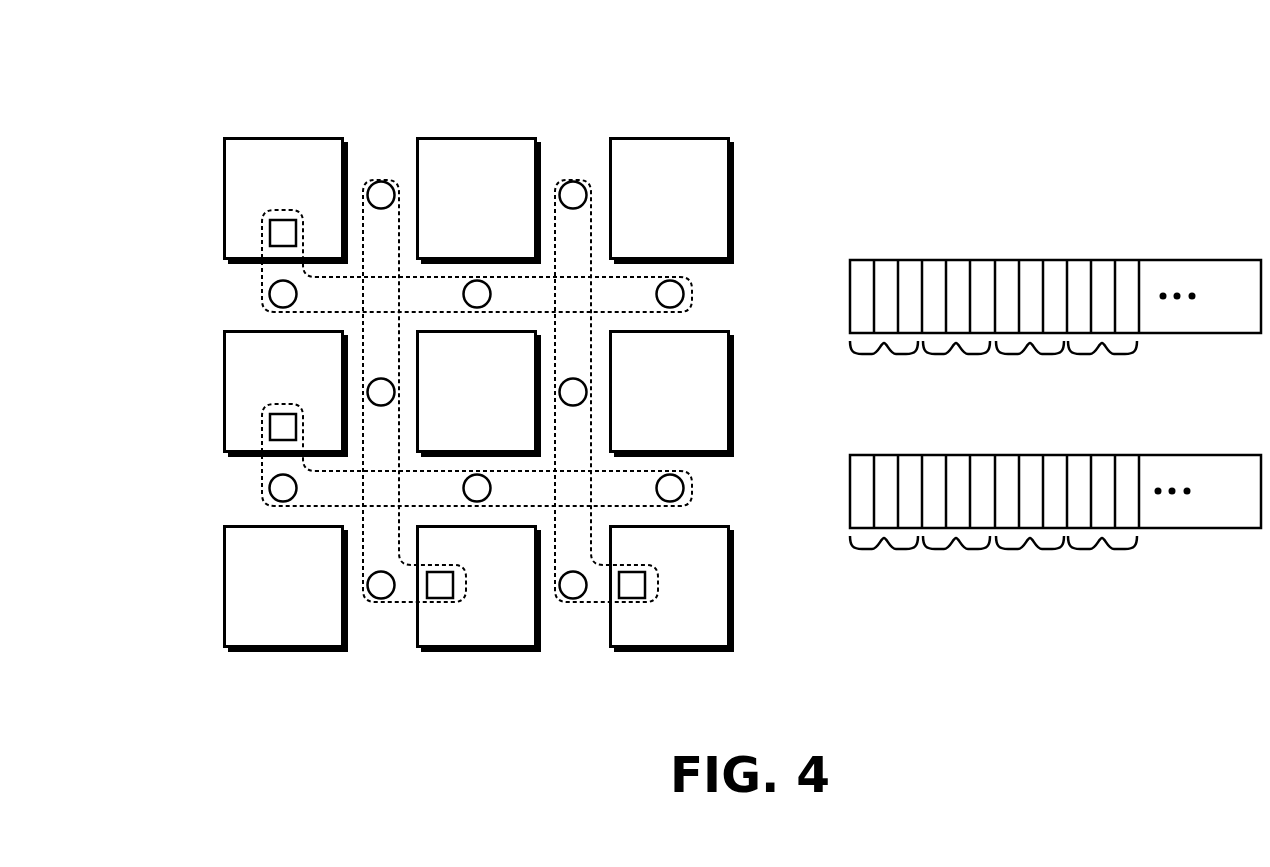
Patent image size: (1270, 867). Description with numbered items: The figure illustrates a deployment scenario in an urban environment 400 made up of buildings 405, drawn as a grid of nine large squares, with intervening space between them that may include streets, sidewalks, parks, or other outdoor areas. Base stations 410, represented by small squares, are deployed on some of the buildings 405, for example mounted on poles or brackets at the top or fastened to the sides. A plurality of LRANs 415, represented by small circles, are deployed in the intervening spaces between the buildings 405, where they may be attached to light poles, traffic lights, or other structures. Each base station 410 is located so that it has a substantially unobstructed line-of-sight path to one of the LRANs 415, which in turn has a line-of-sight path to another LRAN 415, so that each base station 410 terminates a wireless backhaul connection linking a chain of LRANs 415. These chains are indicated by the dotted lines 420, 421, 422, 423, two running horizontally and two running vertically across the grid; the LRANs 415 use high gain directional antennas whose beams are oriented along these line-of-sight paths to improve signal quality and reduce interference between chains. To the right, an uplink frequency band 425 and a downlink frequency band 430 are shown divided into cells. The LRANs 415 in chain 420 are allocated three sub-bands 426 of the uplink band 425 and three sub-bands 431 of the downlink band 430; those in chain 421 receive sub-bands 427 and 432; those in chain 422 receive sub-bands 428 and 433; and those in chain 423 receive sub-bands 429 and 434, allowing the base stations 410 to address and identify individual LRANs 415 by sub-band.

The urban environment 400 is at (1142, 72).
The building 405 is at (283, 135).
The base station 410 is at (281, 219).
The LRAN 415 is at (268, 297).
The LRAN chain 420 is at (693, 293).
The LRAN chain 421 is at (693, 488).
The LRAN chain 422 is at (378, 180).
The LRAN chain 423 is at (570, 180).
The uplink frequency band 425 is at (1188, 260).
The sub-bands of the uplink frequency band 426 is at (884, 358).
The sub-bands of the uplink frequency band 427 is at (956, 358).
The sub-bands of the uplink frequency band 428 is at (1030, 358).
The sub-bands of the uplink frequency band 429 is at (1102, 358).
The downlink frequency band 430 is at (1188, 455).
The sub-bands of the downlink frequency band 431 is at (884, 553).
The sub-bands of the downlink frequency band 432 is at (956, 553).
The sub-bands of the downlink frequency band 433 is at (1030, 553).
The sub-bands of the downlink frequency band 434 is at (1102, 553).